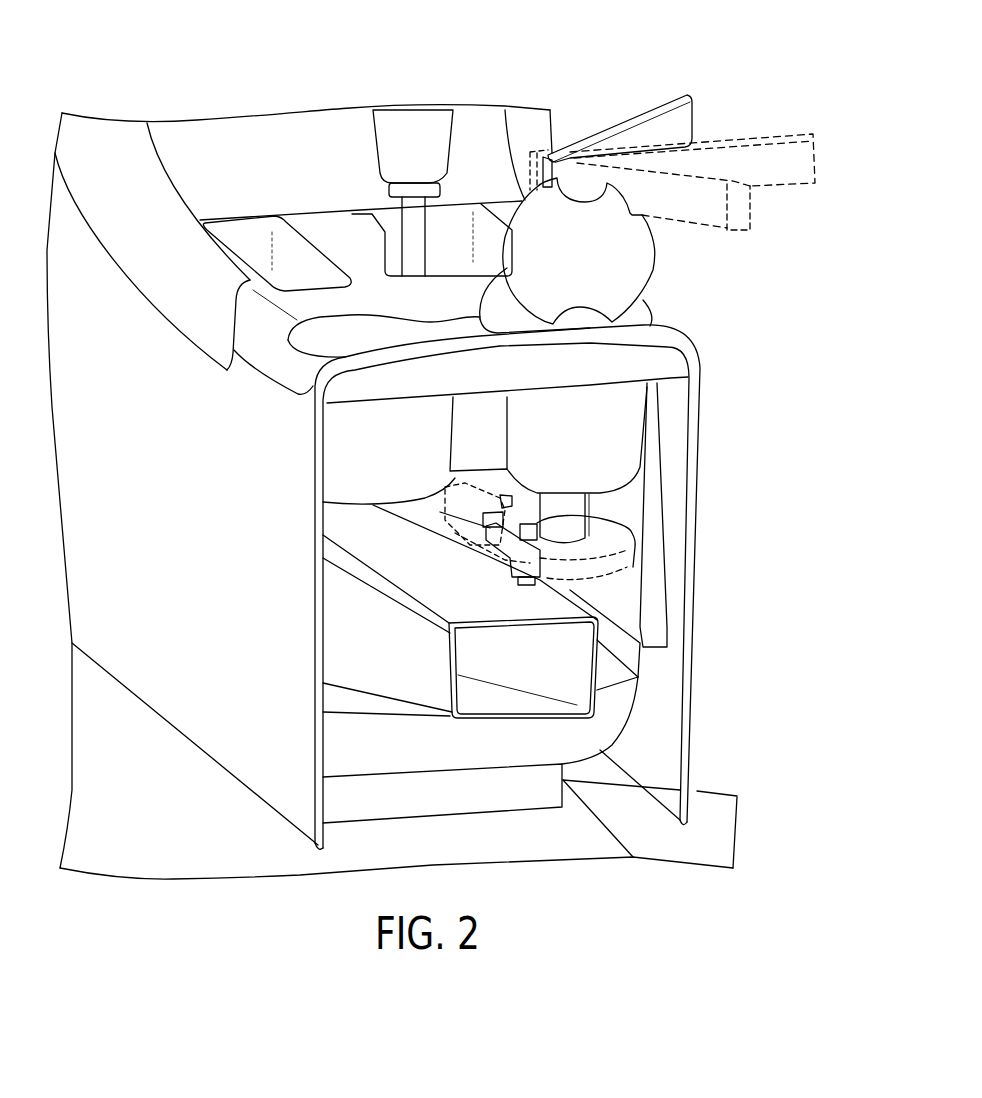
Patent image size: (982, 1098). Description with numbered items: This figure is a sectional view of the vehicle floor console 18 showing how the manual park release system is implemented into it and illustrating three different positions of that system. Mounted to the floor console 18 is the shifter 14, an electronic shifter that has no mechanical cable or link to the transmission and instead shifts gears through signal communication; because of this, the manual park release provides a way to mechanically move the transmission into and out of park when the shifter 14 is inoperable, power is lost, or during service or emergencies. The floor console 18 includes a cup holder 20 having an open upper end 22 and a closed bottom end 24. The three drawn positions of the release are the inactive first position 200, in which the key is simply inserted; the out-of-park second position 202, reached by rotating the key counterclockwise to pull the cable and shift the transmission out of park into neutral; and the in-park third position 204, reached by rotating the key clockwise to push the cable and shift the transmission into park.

The shifter 14 is at (410, 122).
The floor console 18 is at (710, 545).
The cup holder 20 is at (630, 437).
The open upper end 22 is at (657, 303).
The closed bottom end 24 is at (645, 482).
The inactive first position 200 is at (813, 123).
The out-of-park second position 202 is at (688, 80).
The in-park third position 204 is at (757, 227).